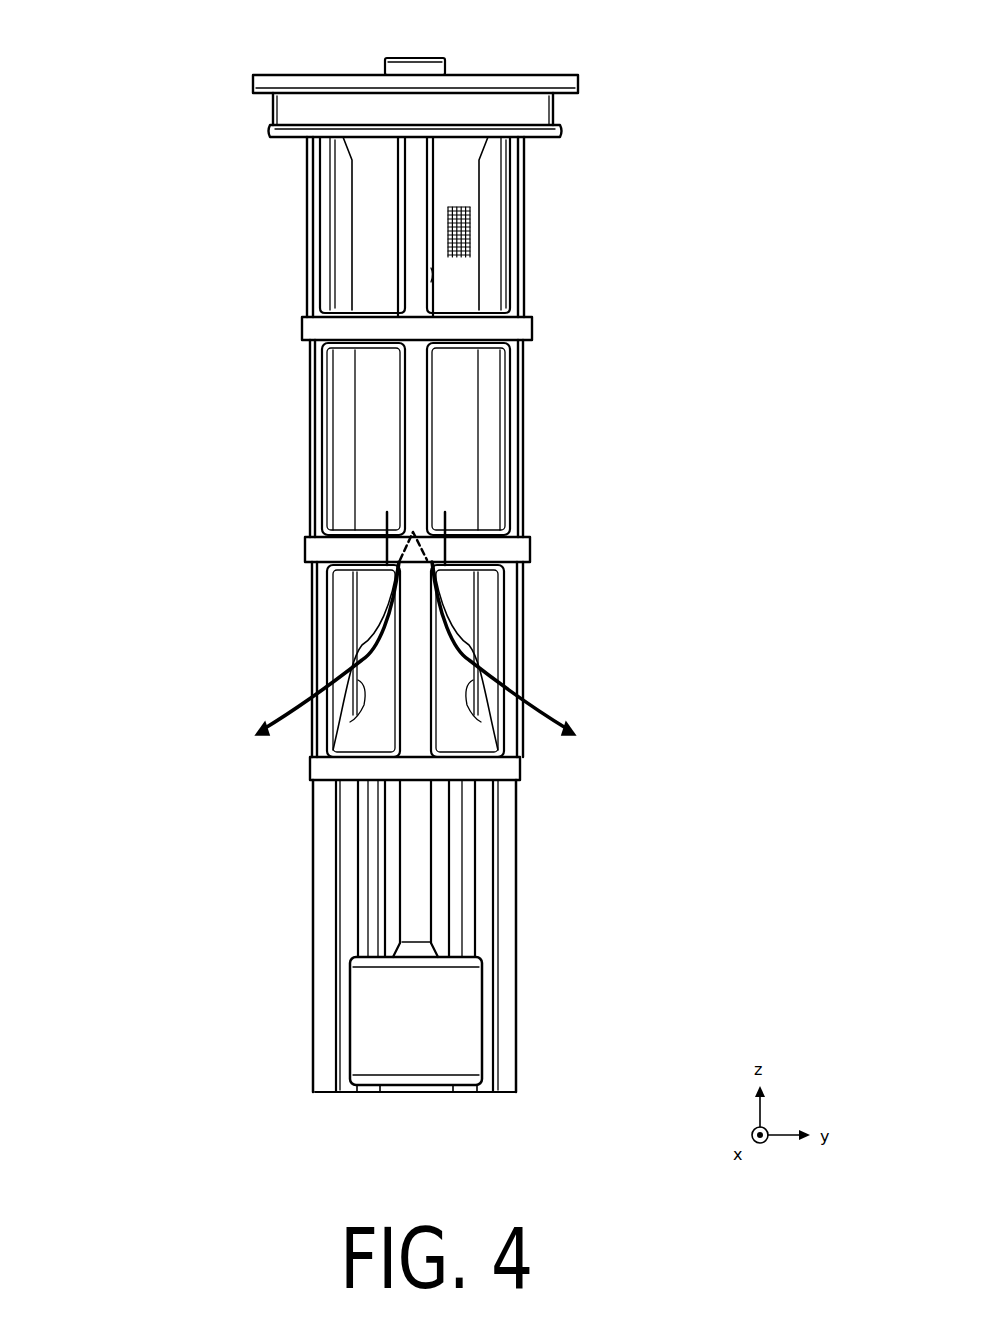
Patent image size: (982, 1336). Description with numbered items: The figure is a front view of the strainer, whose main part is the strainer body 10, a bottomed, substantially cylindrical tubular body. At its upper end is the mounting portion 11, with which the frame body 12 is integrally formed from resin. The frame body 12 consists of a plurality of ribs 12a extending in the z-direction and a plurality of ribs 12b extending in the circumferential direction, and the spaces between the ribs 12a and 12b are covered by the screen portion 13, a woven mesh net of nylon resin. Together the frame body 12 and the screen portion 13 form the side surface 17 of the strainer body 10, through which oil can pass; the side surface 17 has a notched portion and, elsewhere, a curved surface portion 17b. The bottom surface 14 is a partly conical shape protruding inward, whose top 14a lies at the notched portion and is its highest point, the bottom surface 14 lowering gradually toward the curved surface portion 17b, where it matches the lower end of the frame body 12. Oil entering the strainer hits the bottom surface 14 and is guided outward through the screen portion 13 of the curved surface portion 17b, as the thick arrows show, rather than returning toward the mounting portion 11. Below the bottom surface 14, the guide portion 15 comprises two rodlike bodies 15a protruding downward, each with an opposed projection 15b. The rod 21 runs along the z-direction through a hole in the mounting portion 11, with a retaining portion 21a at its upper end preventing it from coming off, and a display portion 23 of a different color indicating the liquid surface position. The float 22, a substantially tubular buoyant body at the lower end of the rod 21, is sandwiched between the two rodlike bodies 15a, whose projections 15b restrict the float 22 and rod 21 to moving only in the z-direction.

The strainer body 10 is at (114, 434).
The mounting portion 11 is at (297, 83).
The frame body 12 is at (190, 287).
The rib 12a is at (413, 360).
The rib 12b is at (342, 327).
The screen portion 13 is at (437, 247).
The bottom surface 14 is at (382, 723).
The top 14a is at (447, 517).
The guide portion 15 is at (213, 848).
The rodlike body 15a is at (327, 870).
The projection 15b is at (370, 828).
The side surface 17 is at (120, 220).
The curved surface portion 17b is at (313, 498).
The rod 21 is at (428, 848).
The retaining portion 21a is at (420, 62).
The float 22 is at (358, 1030).
The display portion 23 is at (433, 278).